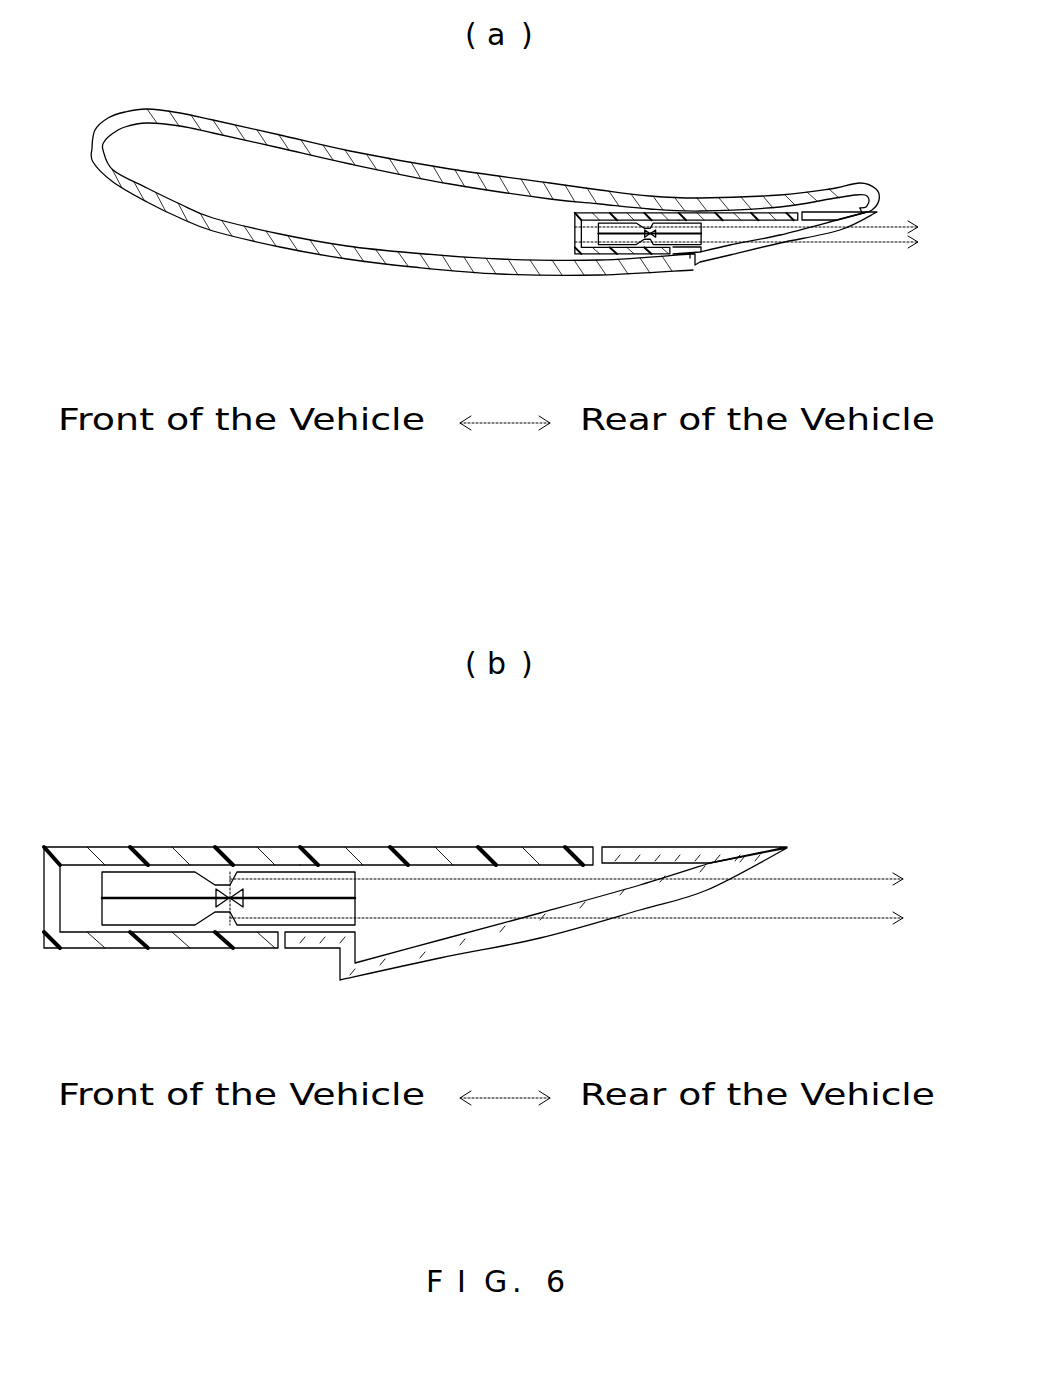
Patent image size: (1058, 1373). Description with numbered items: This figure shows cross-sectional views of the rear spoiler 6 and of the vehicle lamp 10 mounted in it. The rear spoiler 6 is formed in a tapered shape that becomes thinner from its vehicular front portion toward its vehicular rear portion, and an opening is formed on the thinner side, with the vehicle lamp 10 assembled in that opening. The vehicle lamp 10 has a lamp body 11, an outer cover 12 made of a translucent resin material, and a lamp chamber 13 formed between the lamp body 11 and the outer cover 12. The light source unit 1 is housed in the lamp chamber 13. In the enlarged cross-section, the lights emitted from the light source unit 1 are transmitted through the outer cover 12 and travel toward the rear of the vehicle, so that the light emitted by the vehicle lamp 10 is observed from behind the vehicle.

The light source unit 1 is at (628, 279).
The rear spoiler 6 is at (299, 132).
The vehicle lamp 10 is at (500, 606).
The lamp body 11 is at (400, 846).
The outer cover 12 is at (725, 847).
The lamp chamber 13 is at (407, 935).